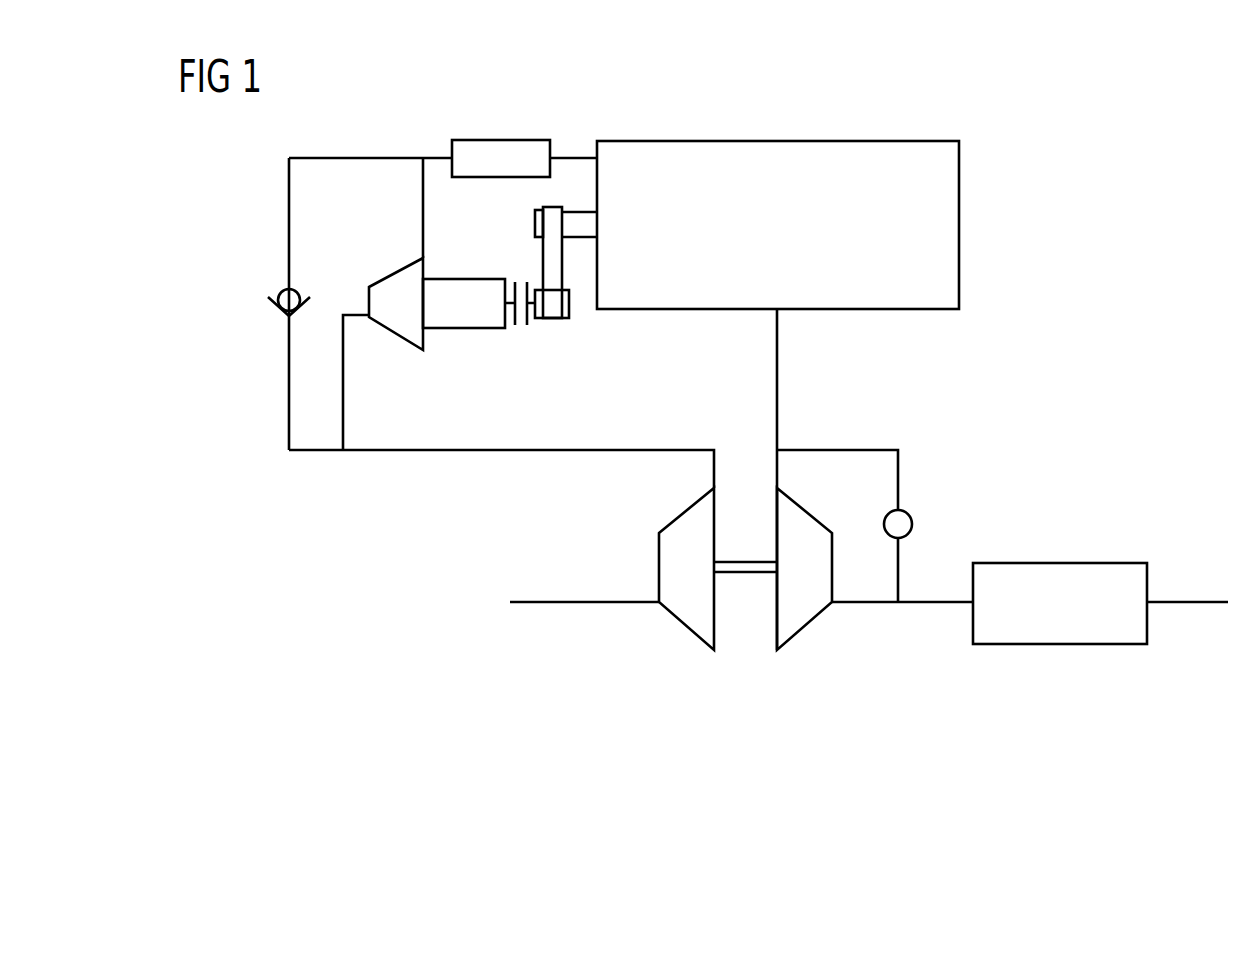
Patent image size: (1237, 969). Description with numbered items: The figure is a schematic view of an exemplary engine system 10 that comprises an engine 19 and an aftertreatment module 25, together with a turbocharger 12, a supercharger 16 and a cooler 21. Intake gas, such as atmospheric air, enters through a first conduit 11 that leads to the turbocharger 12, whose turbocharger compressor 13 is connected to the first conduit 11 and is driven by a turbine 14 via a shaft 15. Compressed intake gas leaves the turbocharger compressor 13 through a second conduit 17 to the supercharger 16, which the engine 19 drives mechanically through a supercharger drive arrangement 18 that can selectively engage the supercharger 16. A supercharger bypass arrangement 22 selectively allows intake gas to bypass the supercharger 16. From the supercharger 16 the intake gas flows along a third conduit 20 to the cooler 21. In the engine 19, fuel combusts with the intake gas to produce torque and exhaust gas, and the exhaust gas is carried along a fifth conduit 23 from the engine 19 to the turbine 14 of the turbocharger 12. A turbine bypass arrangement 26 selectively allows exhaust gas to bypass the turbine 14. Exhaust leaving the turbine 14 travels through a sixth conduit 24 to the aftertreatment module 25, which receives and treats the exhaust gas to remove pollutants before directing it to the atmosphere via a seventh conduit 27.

The engine system 10 is at (1160, 359).
The first conduit 11 is at (548, 612).
The turbocharger 12 is at (745, 622).
The turbocharger compressor 13 is at (680, 625).
The turbine 14 is at (810, 625).
The shaft 15 is at (747, 577).
The supercharger 16 is at (396, 338).
The second conduit 17 is at (660, 448).
The supercharger drive arrangement 18 is at (551, 338).
The engine 19 is at (898, 141).
The third conduit 20 is at (572, 158).
The cooler 21 is at (500, 140).
The supercharger bypass arrangement 22 is at (250, 254).
The fifth conduit 23 is at (783, 364).
The sixth conduit 24 is at (937, 608).
The aftertreatment module 25 is at (1068, 562).
The turbine bypass arrangement 26 is at (924, 463).
The seventh conduit 27 is at (1184, 600).